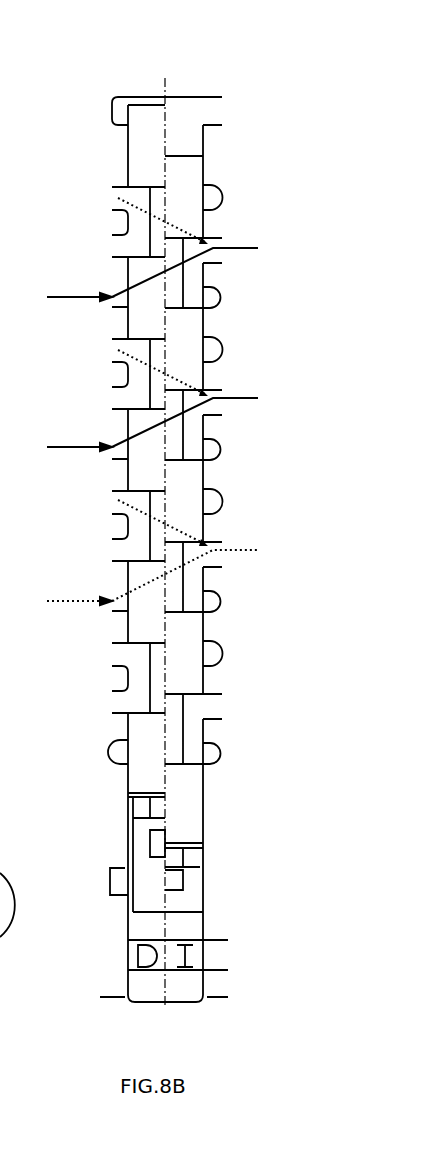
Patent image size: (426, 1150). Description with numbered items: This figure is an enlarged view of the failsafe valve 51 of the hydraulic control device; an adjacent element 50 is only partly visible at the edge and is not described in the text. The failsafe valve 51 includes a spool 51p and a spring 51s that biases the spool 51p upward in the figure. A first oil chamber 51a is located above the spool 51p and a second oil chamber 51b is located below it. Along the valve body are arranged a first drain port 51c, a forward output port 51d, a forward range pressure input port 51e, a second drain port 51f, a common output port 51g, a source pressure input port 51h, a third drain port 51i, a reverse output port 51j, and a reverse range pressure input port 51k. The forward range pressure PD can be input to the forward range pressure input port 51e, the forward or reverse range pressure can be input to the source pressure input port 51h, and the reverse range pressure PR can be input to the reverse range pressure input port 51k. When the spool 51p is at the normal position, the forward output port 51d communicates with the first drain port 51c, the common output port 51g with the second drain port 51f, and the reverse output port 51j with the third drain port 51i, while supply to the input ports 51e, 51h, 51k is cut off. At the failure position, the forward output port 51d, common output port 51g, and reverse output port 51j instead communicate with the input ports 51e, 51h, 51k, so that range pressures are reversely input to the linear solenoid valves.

The developing device 50 is at (0, 828).
The failsafe valve 51 is at (99, 60).
The first oil chamber 51a is at (197, 153).
The second oil chamber 51b is at (110, 866).
The first drain port 51c is at (124, 185).
The forward output port 51d is at (210, 236).
The forward range pressure input port 51e is at (118, 292).
The second drain port 51f is at (118, 363).
The common output port 51g is at (213, 388).
The source pressure input port 51h is at (118, 440).
The third drain port 51i is at (124, 490).
The reverse output port 51j is at (213, 540).
The reverse range pressure input port 51k is at (118, 598).
The spool 51p is at (197, 803).
The spring 51s is at (203, 882).